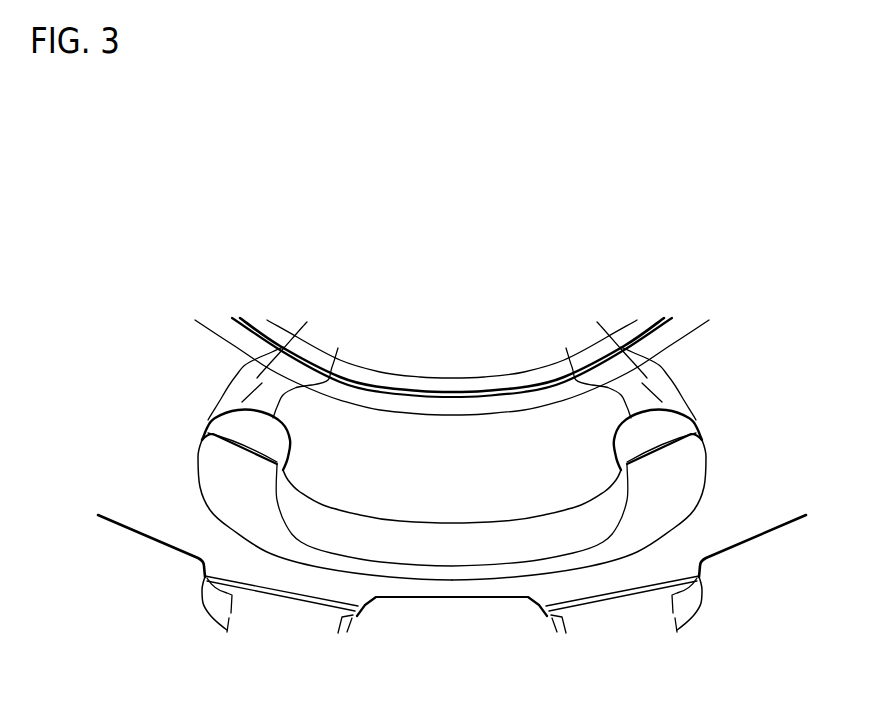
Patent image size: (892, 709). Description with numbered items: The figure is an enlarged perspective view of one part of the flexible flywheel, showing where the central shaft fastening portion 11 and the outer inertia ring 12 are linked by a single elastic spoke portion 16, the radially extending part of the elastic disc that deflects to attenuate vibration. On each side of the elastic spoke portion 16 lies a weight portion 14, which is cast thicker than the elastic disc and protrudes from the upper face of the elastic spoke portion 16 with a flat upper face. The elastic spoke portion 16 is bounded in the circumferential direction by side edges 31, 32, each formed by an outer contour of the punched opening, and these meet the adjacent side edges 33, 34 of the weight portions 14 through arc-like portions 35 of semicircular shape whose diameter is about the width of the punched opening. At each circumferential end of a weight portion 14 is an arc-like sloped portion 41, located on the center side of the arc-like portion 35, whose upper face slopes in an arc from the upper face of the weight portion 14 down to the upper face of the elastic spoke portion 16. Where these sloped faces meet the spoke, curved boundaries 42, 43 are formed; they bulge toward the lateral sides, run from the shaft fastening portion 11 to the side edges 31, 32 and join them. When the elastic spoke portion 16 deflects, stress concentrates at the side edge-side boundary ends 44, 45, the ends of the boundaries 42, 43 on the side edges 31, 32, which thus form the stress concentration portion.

The shaft fastening portion 11 is at (667, 327).
The inertia ring 12 is at (801, 513).
The weight portion 14 is at (450, 557).
The elastic spoke portion 16 is at (143, 516).
The side edge 31 is at (204, 476).
The side edge 32 is at (700, 476).
The side edge 33 is at (291, 485).
The side edge 34 is at (613, 485).
The arc-like portion 35 is at (338, 348).
The arc-like sloped portion 41 is at (307, 322).
The boundary 42 is at (211, 406).
The boundary 43 is at (693, 406).
The side edge-side boundary end 44 is at (201, 441).
The side edge-side boundary end 45 is at (703, 444).